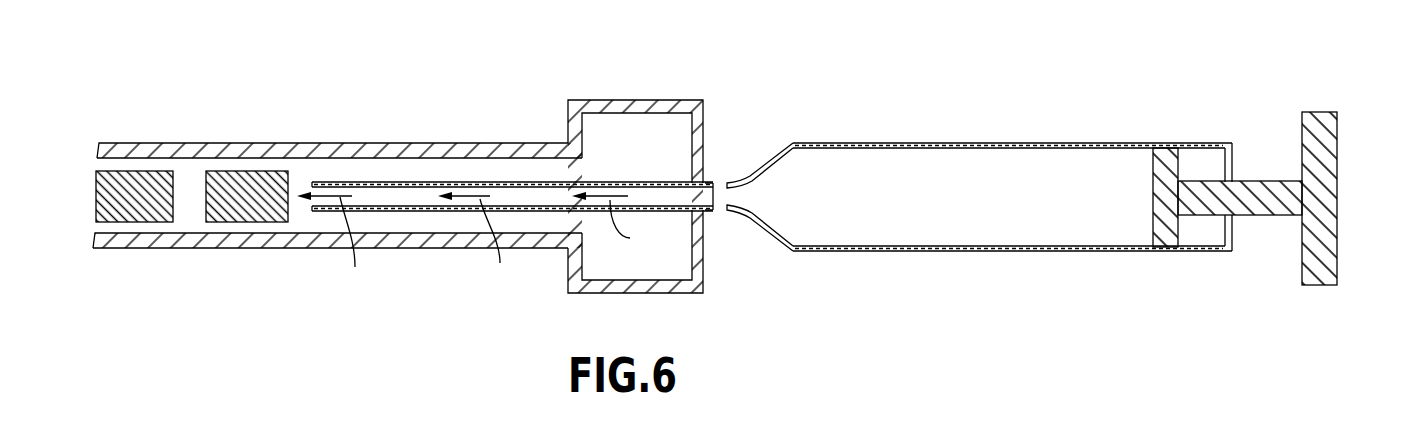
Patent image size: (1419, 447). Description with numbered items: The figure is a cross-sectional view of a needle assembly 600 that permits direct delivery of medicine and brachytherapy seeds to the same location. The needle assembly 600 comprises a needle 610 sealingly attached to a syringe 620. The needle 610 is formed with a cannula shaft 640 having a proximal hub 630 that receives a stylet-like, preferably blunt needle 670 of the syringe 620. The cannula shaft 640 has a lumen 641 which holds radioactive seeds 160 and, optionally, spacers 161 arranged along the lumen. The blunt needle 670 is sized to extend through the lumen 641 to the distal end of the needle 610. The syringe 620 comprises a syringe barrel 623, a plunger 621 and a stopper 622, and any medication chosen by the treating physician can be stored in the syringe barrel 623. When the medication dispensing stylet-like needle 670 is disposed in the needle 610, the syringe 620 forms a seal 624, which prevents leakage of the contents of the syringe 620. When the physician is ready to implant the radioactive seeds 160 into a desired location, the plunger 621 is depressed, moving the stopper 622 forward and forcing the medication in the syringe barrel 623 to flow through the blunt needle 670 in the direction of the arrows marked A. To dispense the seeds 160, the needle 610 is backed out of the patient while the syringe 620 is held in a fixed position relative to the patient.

The brachytherapy seeds 160 is at (142, 222).
The spacers 161 is at (260, 222).
The needle assembly 600 is at (1066, 182).
The needle 610 is at (429, 161).
The syringe 620 is at (979, 238).
The plunger 621 is at (1340, 200).
The stopper 622 is at (1162, 242).
The syringe barrel 623 is at (926, 242).
The seal 624 is at (714, 182).
The proximal hub 630 is at (633, 80).
The cannula shaft 640 is at (337, 151).
The lumen 641 is at (318, 161).
The blunt needle 670 is at (677, 180).